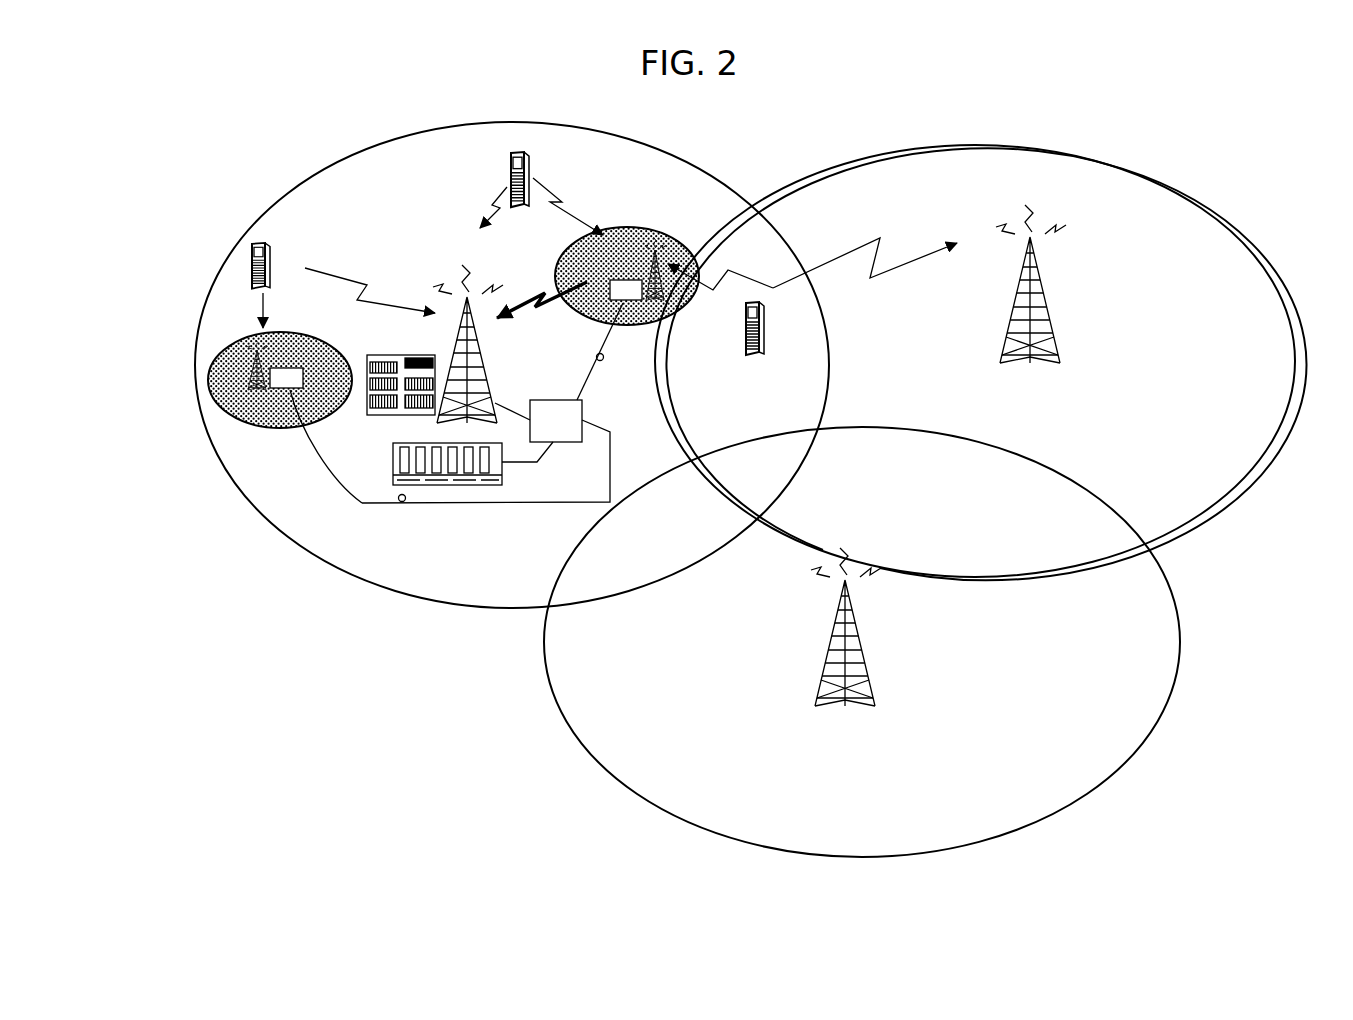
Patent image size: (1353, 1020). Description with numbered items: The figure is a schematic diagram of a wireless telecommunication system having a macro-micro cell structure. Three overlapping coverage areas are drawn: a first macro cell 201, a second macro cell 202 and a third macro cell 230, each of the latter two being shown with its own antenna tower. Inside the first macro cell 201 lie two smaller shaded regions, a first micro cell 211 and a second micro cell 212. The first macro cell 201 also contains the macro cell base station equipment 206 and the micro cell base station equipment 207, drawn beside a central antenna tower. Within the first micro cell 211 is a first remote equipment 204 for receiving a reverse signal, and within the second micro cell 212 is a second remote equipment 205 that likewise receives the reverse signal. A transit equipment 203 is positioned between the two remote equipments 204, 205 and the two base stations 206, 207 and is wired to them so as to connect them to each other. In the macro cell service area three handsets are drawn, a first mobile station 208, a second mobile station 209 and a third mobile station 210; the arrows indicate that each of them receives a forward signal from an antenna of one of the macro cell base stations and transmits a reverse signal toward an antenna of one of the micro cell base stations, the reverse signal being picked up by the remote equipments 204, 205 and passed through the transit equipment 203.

The first macro cell 201 is at (440, 607).
The second macro cell 202 is at (1215, 500).
The third macro cell 230 is at (1093, 780).
The transit equipment 203 is at (567, 400).
The first remote equipment 204 is at (580, 313).
The second remote equipment 205 is at (293, 367).
The macro cell base station equipment 206 is at (410, 355).
The micro cell base station equipment 207 is at (502, 477).
The first mobile station 208 is at (512, 163).
The second mobile station 209 is at (747, 353).
The third mobile station 210 is at (255, 245).
The first micro cell 211 is at (642, 227).
The second micro cell 212 is at (272, 428).